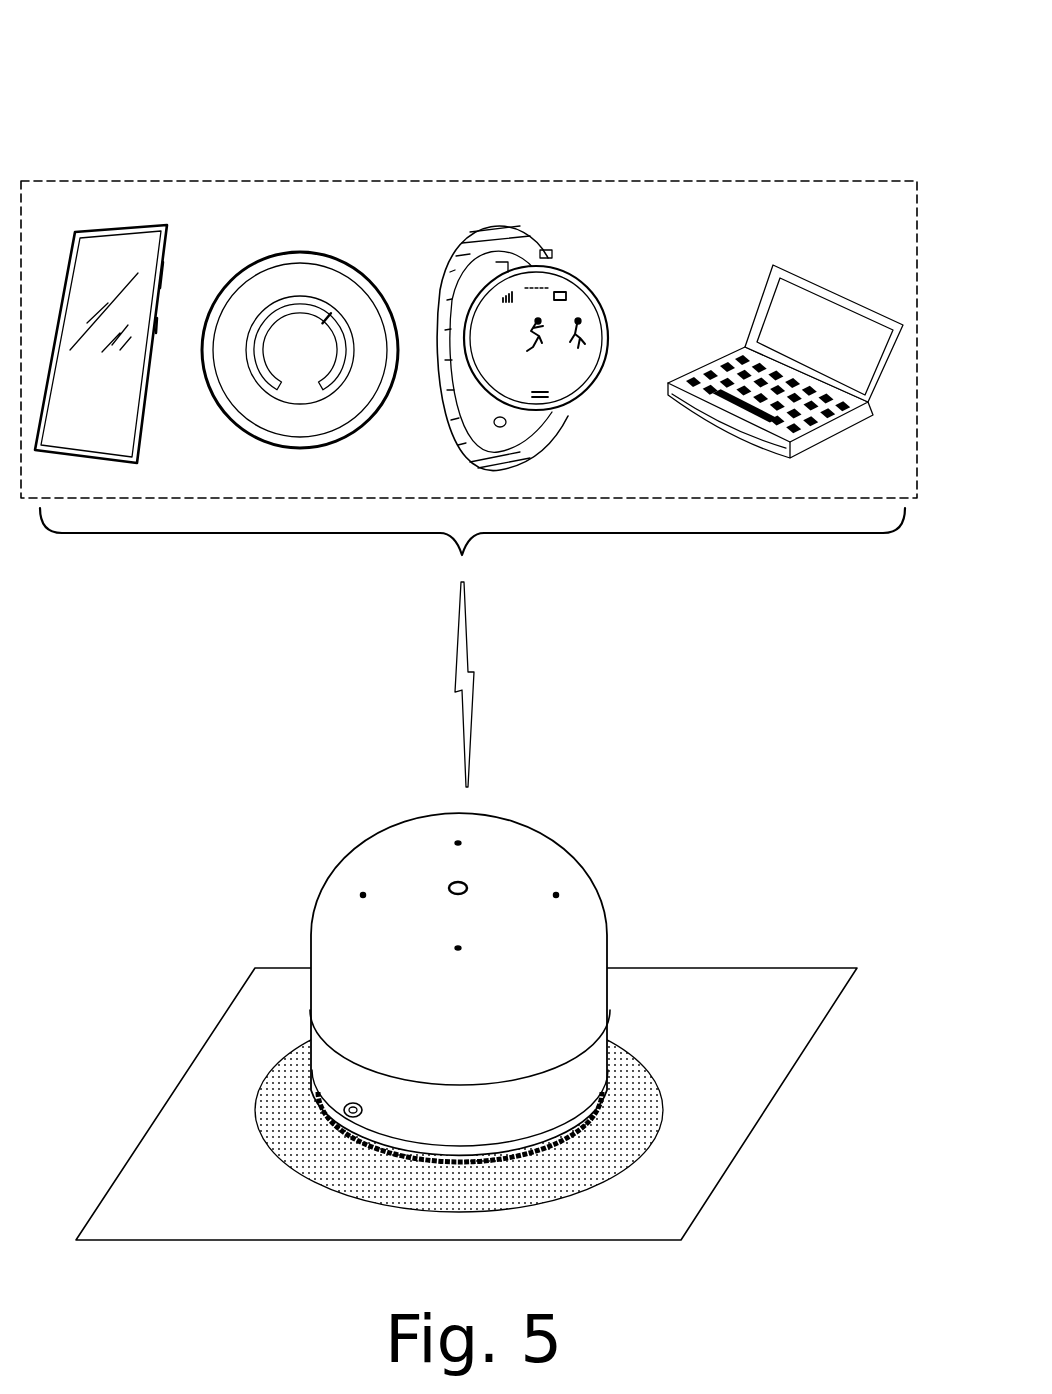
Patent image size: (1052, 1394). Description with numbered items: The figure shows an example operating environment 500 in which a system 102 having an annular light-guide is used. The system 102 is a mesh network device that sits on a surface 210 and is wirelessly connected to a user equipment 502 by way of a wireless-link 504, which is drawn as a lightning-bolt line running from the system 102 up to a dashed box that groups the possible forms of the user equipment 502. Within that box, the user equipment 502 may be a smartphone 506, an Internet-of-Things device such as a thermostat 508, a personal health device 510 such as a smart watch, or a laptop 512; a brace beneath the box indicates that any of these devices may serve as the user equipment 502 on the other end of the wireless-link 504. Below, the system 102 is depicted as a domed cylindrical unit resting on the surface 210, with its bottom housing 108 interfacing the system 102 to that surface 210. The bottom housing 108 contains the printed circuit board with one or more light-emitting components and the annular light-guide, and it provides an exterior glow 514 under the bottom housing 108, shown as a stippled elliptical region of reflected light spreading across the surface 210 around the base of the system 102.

The operating environment 500 is at (130, 45).
The user equipment 502 is at (420, 181).
The wireless-link 504 is at (475, 690).
The smartphone 506 is at (170, 248).
The thermostat 508 is at (283, 253).
The personal health device 510 is at (548, 250).
The laptop 512 is at (787, 265).
The system 102 is at (345, 808).
The bottom housing 108 is at (525, 1154).
The surface 210 is at (705, 968).
The exterior glow 514 is at (632, 1057).